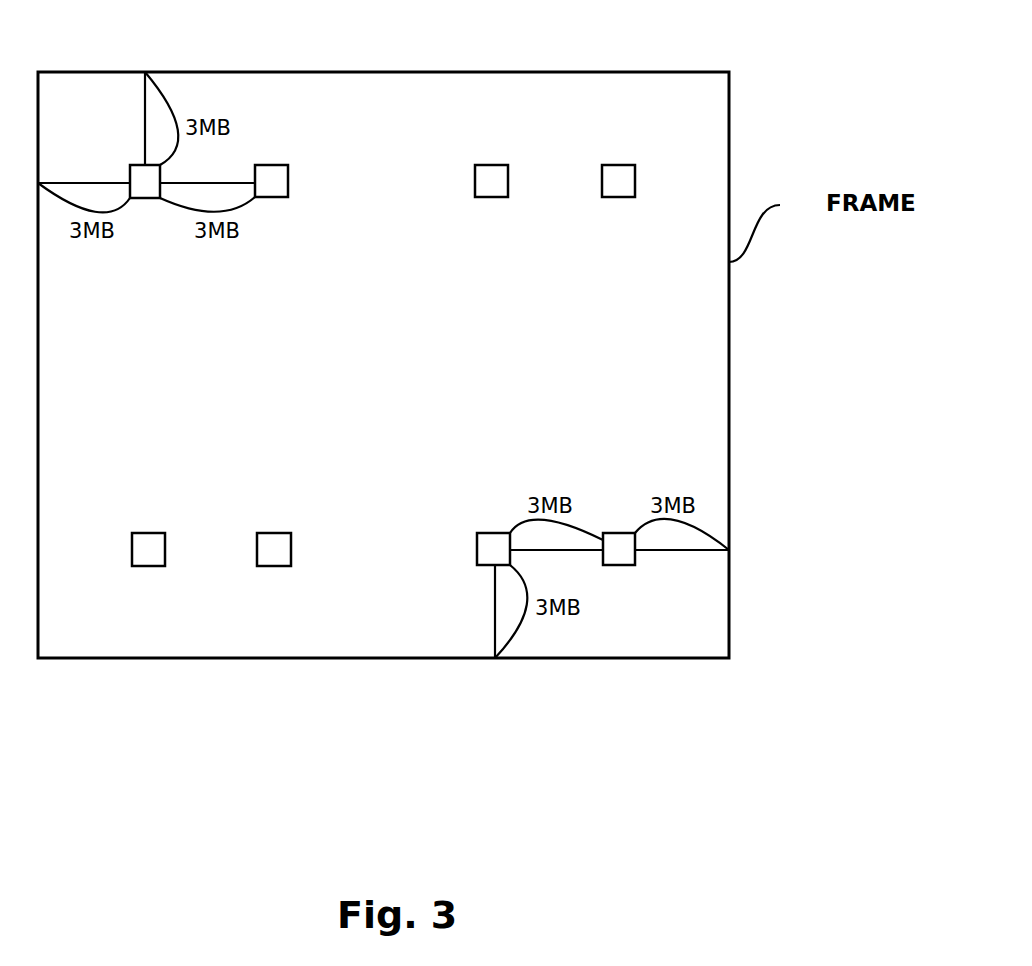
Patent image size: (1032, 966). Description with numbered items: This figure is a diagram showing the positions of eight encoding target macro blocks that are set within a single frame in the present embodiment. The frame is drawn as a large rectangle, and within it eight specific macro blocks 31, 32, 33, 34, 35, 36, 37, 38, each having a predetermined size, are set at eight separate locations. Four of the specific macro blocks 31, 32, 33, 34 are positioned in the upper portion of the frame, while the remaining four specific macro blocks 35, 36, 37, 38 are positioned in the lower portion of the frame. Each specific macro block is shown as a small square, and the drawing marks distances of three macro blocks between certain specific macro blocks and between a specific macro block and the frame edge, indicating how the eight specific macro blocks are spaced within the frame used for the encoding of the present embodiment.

The specific macro block 31 is at (136, 165).
The specific macro block 32 is at (280, 165).
The specific macro block 33 is at (488, 165).
The specific macro block 34 is at (613, 165).
The specific macro block 35 is at (153, 567).
The specific macro block 36 is at (277, 567).
The specific macro block 37 is at (481, 565).
The specific macro block 38 is at (620, 565).